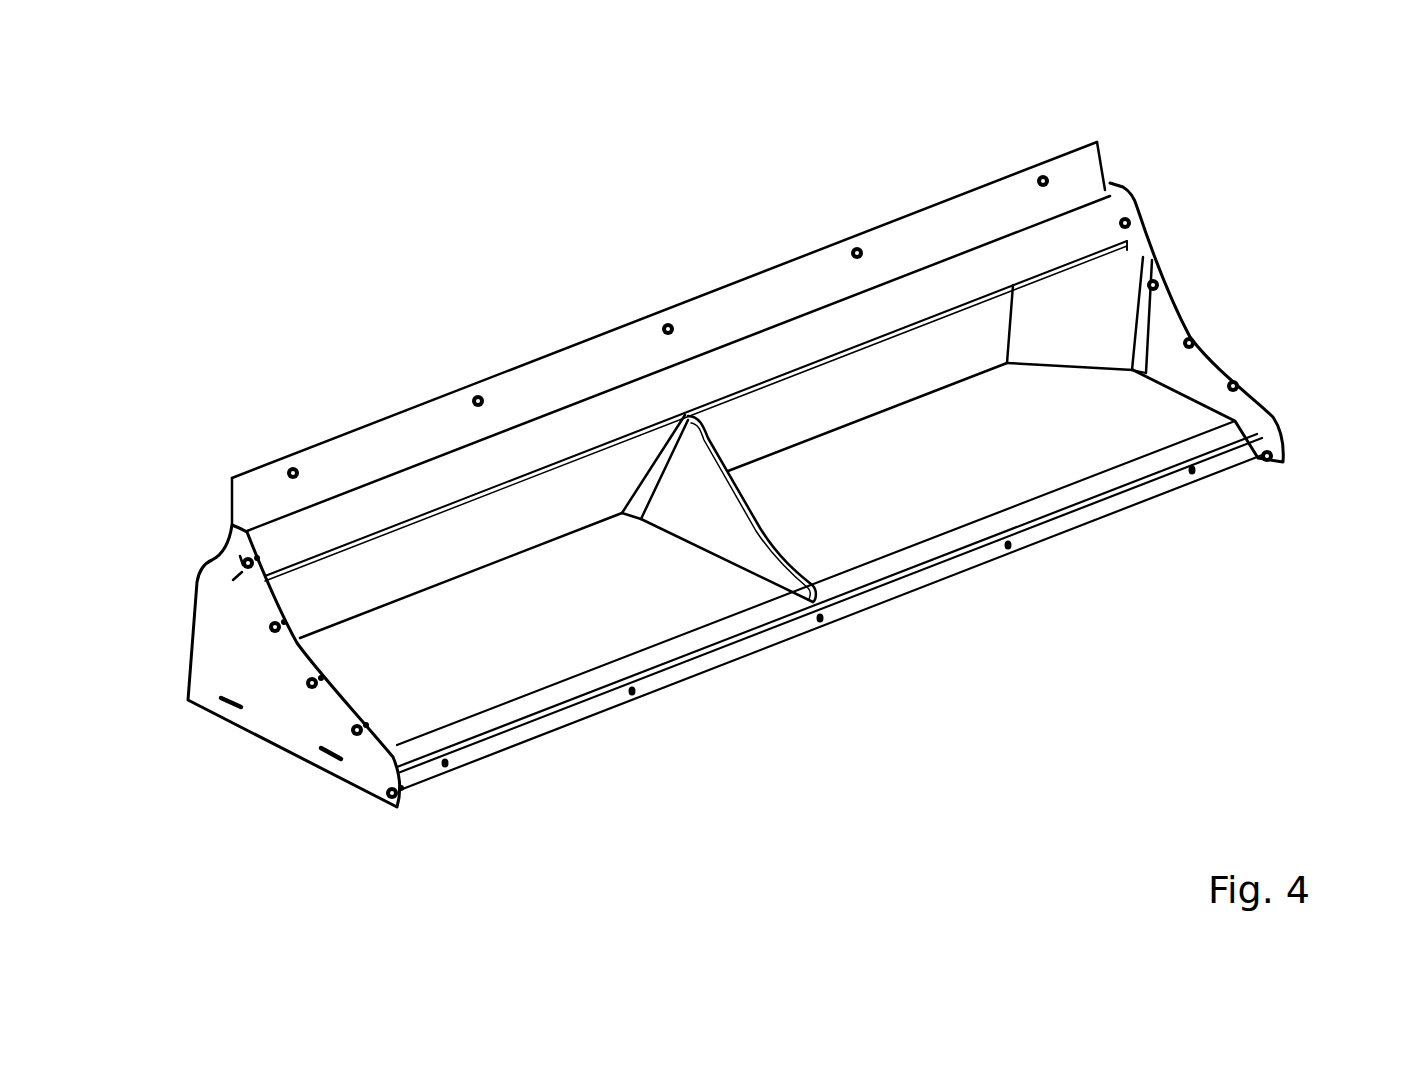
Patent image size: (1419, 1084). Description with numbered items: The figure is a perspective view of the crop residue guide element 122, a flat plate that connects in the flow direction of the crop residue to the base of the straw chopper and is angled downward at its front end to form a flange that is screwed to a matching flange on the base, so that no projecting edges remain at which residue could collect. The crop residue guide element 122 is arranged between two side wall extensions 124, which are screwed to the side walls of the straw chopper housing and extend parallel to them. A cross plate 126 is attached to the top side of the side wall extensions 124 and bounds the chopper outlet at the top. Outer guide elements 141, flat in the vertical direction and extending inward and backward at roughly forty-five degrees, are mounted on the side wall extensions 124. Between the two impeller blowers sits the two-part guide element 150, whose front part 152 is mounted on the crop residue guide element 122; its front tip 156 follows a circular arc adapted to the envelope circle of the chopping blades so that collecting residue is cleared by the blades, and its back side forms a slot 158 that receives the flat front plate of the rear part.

The crop residue guide element 122 is at (518, 660).
The side wall extensions 124 is at (277, 720).
The cross plate 126 is at (362, 450).
The outer guide elements 141 is at (1098, 302).
The two-part guide element 150 is at (930, 453).
The front part 152 is at (758, 576).
The front tip 156 is at (757, 523).
The slot 158 is at (548, 308).